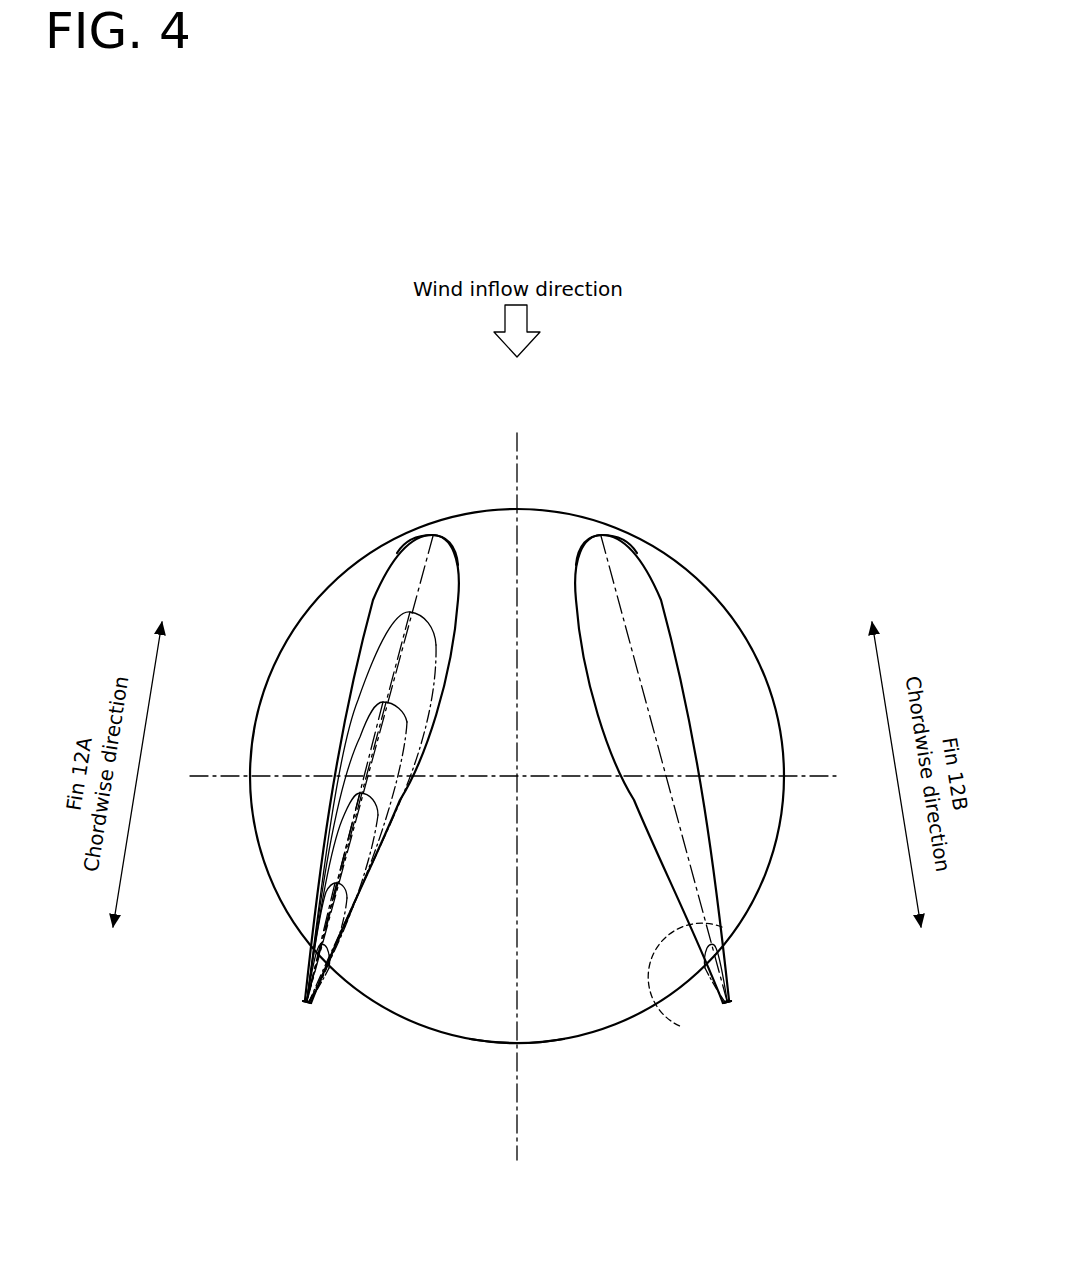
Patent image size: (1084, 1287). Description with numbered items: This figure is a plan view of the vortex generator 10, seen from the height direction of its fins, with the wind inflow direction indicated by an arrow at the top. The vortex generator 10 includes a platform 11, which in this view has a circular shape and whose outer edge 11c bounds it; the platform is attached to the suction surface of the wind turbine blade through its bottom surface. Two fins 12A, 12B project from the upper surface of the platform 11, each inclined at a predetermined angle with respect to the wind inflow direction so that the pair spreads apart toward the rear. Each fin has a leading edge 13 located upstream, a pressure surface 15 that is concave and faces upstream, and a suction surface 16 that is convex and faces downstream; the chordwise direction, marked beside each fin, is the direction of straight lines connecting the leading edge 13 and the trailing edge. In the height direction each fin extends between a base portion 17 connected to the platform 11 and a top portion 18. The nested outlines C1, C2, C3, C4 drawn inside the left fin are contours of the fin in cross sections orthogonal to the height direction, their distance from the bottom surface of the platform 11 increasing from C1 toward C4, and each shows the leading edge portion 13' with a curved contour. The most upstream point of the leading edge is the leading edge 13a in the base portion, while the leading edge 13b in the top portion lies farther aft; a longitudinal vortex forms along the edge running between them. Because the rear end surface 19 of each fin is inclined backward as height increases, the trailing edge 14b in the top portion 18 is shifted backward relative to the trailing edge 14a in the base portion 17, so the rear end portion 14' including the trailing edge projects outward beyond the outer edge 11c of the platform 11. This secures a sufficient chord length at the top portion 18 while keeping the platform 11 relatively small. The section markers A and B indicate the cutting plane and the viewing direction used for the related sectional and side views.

The vortex generator 10 is at (821, 297).
The platform 11 is at (542, 521).
The outer edge of the platform 11c is at (556, 1044).
The fin 12A is at (357, 697).
The fin 12B is at (660, 673).
The leading edge 13 is at (546, 768).
The leading edge in the base portion 13a is at (437, 538).
The leading edge in the top portion 13b is at (320, 944).
The leading edge portion 13' is at (517, 481).
The rear end portion 14' is at (520, 1011).
The trailing edge in the base portion 14a is at (685, 993).
The trailing edge in the top portion 14b is at (729, 1006).
The pressure surface 15 is at (366, 748).
The suction surface 16 is at (412, 719).
The base portion 17 is at (388, 808).
The top portion 18 is at (311, 965).
The rear end surface 19 is at (308, 1006).
The contour C1 is at (383, 636).
The contour C2 is at (363, 723).
The contour C3 is at (322, 800).
The contour C4 is at (309, 884).
The section line A is at (458, 463).
The view direction B is at (273, 1125).